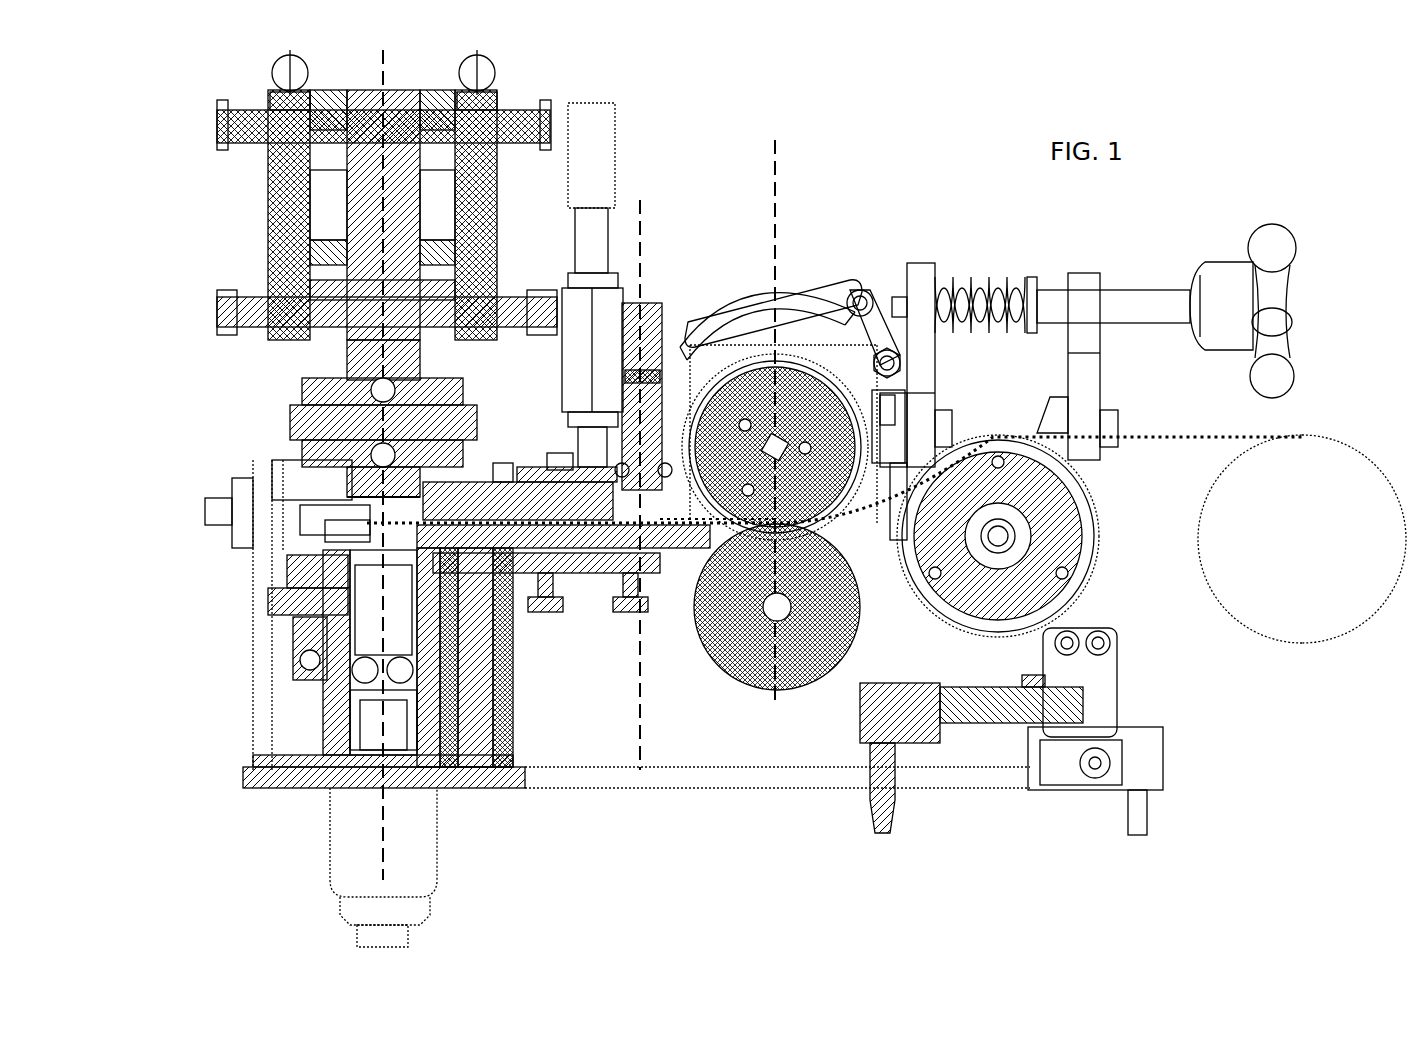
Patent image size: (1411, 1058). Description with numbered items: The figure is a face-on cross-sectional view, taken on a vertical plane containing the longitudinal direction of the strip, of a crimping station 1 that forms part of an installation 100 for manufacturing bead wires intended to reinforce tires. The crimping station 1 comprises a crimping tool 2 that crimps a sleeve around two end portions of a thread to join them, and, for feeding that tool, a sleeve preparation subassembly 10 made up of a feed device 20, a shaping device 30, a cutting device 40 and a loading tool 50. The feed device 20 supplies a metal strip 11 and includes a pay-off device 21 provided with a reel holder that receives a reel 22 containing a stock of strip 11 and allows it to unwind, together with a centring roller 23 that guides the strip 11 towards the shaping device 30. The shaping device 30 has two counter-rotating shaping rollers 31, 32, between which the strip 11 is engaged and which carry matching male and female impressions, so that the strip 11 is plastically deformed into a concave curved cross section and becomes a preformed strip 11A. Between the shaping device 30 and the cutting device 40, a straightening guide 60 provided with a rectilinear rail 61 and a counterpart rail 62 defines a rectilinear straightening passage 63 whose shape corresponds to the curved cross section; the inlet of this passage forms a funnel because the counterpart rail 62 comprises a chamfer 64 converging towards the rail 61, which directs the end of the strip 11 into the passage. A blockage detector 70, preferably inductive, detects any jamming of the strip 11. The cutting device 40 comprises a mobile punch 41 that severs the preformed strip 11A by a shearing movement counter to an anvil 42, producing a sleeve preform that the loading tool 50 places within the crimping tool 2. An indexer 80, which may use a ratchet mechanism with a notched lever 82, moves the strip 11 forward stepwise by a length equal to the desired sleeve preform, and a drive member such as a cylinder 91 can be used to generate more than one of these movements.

The installation 100 is at (975, 140).
The crimping station 1 is at (770, 838).
The sleeve preparation subassembly 10 is at (655, 800).
The metal strip 11 is at (900, 580).
The preformed strip 11A is at (677, 550).
The crimping tool 2 is at (340, 488).
The feed device 20 is at (1170, 605).
The pay-off device 21 is at (1247, 580).
The reel 22 is at (1333, 640).
The centring roller 23 is at (1087, 650).
The shaping device 30 is at (867, 533).
The shaping roller 31 is at (743, 683).
The shaping roller 32 is at (847, 540).
The cutting device 40 is at (275, 593).
The mobile punch 41 is at (405, 535).
The anvil 42 is at (293, 440).
The loading tool 50 is at (372, 512).
The straightening guide 60 is at (577, 620).
The rail 61 is at (537, 603).
The counterpart rail 62 is at (476, 790).
The straightening passage 63 is at (525, 787).
The chamfer 64 is at (565, 462).
The blockage detector 70 is at (590, 447).
The indexer 80 is at (757, 267).
The notched lever 82 is at (737, 340).
The cylinder 91 is at (370, 868).